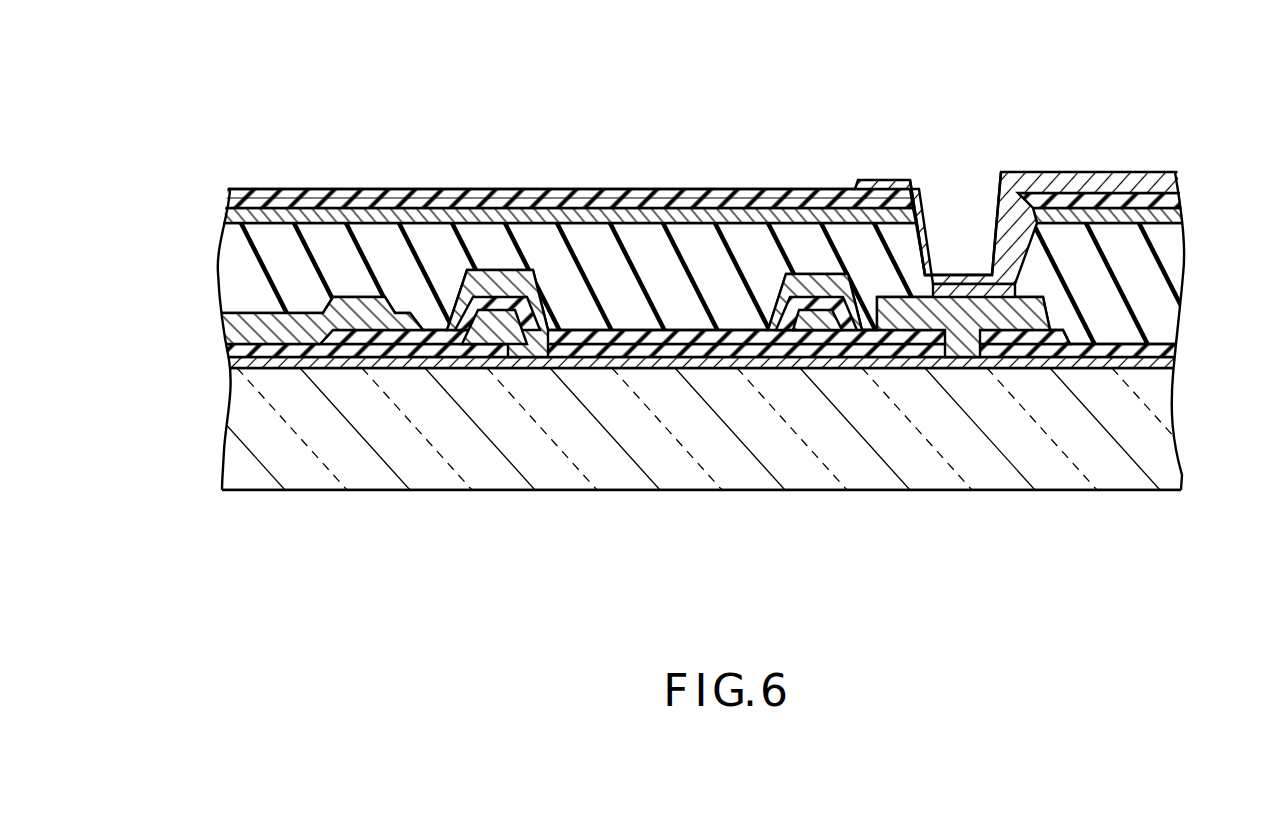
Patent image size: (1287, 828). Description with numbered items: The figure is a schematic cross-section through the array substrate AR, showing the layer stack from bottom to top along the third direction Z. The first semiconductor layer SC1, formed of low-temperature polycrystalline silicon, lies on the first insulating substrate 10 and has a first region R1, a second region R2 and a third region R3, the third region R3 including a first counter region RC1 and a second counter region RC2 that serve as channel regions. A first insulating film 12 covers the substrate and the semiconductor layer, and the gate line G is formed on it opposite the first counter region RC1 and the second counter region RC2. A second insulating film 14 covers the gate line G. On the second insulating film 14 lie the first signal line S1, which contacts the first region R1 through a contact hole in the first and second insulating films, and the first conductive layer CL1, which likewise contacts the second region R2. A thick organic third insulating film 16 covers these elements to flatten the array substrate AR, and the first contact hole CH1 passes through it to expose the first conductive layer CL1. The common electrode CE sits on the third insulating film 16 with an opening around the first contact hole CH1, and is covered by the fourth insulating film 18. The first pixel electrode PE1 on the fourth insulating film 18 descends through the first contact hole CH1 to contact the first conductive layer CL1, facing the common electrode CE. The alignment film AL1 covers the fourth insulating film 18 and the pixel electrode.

The first insulating substrate 10 is at (1160, 442).
The first insulating film 12 is at (1160, 362).
The second insulating film 14 is at (1160, 349).
The third insulating film 16 is at (1166, 280).
The fourth insulating film 18 is at (1160, 200).
The common electrode CE is at (1160, 212).
The first pixel electrode PE1 is at (1118, 184).
The first contact hole CH1 is at (929, 226).
The first conductive layer CL1 is at (1022, 300).
The first signal line S1 is at (338, 311).
The gate line G is at (500, 329).
The first counter region RC1 is at (535, 292).
The second counter region RC2 is at (850, 292).
The alignment film AL1 is at (698, 187).
The array substrate AR is at (1182, 149).
The third direction Z is at (212, 197).
The first region R1 is at (413, 369).
The second region R2 is at (955, 369).
The third region R3 is at (883, 376).
The first semiconductor layer SC1 is at (373, 538).